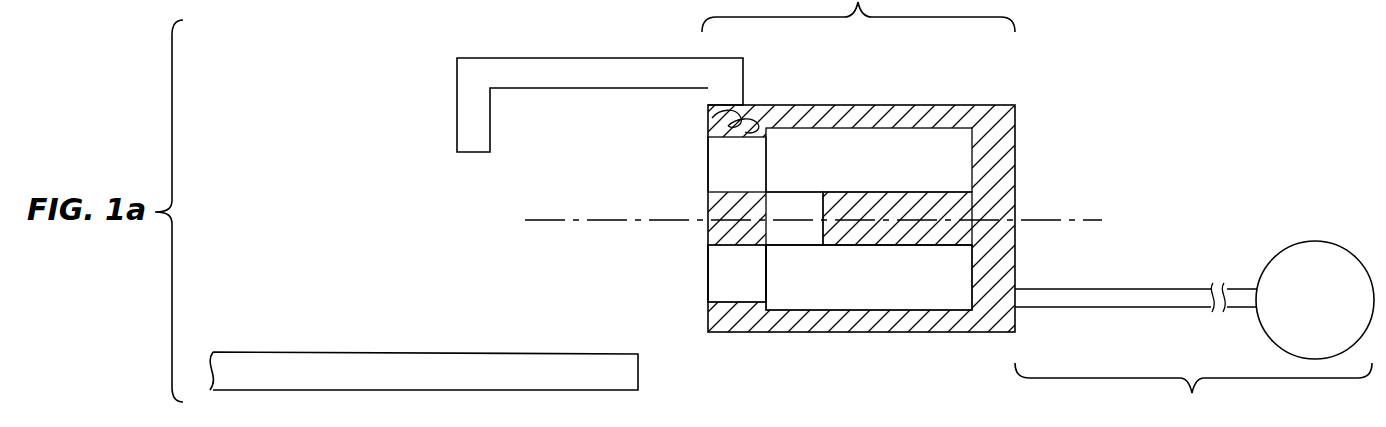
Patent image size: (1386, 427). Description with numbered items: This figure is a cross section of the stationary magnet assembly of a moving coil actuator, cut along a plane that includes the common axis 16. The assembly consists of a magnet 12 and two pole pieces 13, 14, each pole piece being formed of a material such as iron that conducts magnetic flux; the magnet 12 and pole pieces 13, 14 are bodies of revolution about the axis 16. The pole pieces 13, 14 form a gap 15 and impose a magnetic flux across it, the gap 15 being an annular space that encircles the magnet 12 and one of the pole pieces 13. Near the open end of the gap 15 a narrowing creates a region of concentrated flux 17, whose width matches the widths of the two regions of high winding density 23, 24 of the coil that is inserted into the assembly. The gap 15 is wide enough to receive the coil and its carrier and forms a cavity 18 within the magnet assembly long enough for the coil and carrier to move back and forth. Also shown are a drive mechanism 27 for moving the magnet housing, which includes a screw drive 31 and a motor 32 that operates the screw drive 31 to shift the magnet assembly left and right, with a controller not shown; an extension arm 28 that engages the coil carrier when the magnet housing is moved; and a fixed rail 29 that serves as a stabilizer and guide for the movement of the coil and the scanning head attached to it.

The magnet 12 is at (800, 202).
The pole piece 13 is at (720, 228).
The pole piece 14 is at (847, 232).
The gap 15 is at (715, 280).
The axis 16 is at (1064, 220).
The region of concentrated flux 17 is at (712, 118).
The cavity 18 is at (793, 293).
The region of high winding density 23 is at (745, 420).
The region of high winding density 24 is at (900, 420).
The drive mechanism 27 is at (1192, 393).
The extension arm 28 is at (550, 58).
The fixed rail 29 is at (438, 352).
The screw drive 31 is at (1117, 288).
The motor 32 is at (1300, 238).